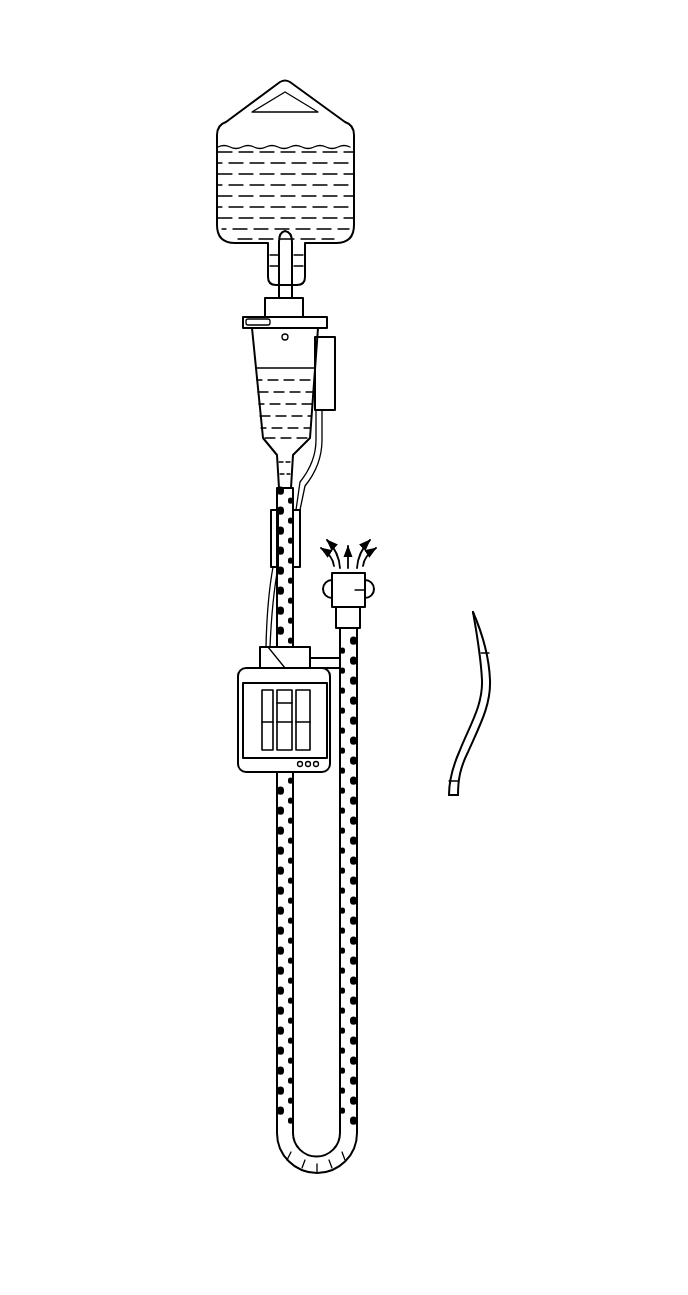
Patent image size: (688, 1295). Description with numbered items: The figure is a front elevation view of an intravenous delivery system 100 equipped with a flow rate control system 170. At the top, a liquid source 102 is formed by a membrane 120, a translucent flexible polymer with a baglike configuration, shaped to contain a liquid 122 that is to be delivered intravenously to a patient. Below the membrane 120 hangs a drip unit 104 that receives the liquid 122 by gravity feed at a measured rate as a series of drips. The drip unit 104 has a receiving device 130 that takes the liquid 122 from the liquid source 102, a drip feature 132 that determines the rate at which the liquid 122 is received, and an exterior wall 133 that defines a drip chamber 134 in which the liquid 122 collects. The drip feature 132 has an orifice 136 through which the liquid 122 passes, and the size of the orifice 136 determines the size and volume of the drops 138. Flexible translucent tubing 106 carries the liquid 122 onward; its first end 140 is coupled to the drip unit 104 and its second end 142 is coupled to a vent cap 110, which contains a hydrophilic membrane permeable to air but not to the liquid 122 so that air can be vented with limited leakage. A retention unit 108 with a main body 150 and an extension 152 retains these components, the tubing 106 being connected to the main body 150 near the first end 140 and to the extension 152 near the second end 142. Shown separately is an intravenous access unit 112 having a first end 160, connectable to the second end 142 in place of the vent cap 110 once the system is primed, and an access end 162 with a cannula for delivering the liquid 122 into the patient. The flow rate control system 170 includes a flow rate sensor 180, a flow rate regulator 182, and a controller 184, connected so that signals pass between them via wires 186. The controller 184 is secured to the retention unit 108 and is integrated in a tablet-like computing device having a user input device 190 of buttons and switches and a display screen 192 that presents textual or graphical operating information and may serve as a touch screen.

The intravenous delivery system 100 is at (134, 48).
The liquid source 102 is at (364, 152).
The drip unit 104 is at (366, 261).
The tubing 106 is at (258, 840).
The retention unit 108 is at (231, 669).
The vent cap 110 is at (375, 589).
The intravenous access unit 112 is at (499, 706).
The membrane 120 is at (224, 134).
The liquid 122 is at (236, 187).
The receiving device 130 is at (272, 264).
The drip feature 132 is at (256, 335).
The exterior wall 133 is at (257, 360).
The drip chamber 134 is at (262, 426).
The orifice 136 is at (250, 321).
The drops 138 is at (289, 339).
The first end 140 is at (277, 496).
The second end 142 is at (357, 638).
The main body 150 is at (263, 662).
The extension 152 is at (350, 665).
The first end 160 is at (460, 790).
The access end 162 is at (486, 650).
The flow rate control system 170 is at (373, 414).
The flow rate sensor 180 is at (336, 344).
The flow rate regulator 182 is at (271, 542).
The controller 184 is at (223, 709).
The wires 186 is at (326, 446).
The user input device 190 is at (310, 770).
The display screen 192 is at (250, 742).